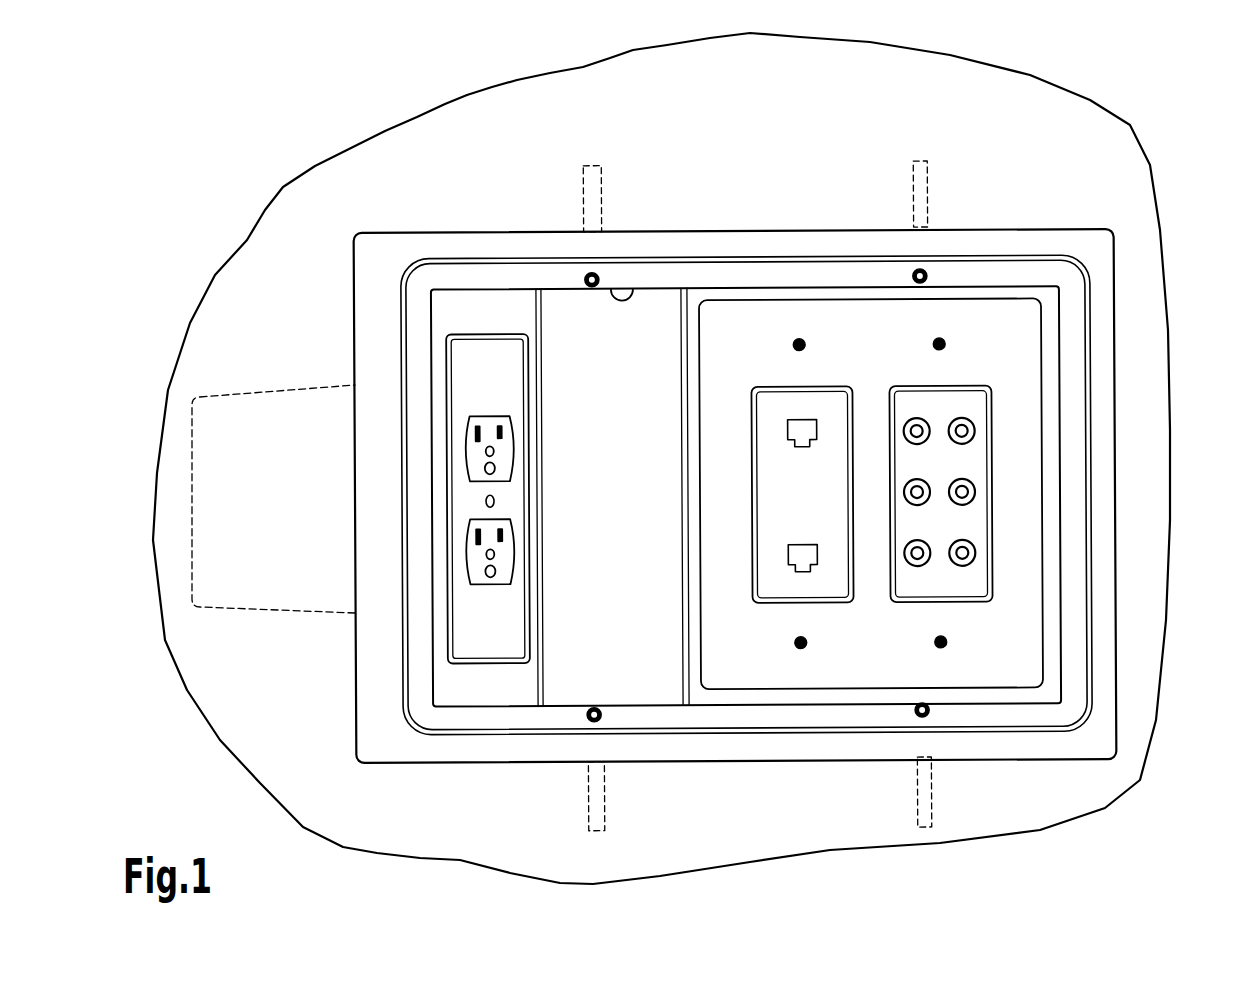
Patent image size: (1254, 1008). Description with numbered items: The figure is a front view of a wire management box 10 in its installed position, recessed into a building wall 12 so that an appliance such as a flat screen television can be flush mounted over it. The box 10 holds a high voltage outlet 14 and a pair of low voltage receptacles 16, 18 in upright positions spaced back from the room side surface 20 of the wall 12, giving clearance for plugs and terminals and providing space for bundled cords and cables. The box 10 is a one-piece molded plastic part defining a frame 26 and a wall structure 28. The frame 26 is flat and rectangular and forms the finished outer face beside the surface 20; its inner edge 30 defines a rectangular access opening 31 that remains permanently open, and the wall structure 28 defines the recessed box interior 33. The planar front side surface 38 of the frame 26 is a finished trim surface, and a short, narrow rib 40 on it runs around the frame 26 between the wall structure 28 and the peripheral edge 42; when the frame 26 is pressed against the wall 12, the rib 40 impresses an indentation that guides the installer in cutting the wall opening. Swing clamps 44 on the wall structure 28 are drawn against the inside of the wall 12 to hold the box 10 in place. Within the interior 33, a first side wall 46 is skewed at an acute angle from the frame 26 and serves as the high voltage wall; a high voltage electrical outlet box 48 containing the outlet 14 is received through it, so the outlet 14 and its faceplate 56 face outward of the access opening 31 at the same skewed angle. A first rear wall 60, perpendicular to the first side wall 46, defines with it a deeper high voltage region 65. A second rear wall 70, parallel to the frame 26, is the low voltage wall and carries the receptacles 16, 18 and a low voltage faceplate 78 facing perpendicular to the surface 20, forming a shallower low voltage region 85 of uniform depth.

The wire management box 10 is at (400, 228).
The building wall 12 is at (460, 92).
The high voltage outlet 14 is at (490, 413).
The low voltage receptacle 16 is at (823, 403).
The low voltage receptacle 18 is at (973, 382).
The room side surface 20 is at (427, 153).
The frame 26 is at (378, 300).
The wall structure 28 is at (445, 305).
The inner edge 30 is at (635, 297).
The access opening 31 is at (672, 288).
The box interior 33 is at (618, 398).
The front side surface 38 is at (1105, 348).
The rib 40 is at (1088, 395).
The peripheral edge 42 is at (1115, 480).
The swing clamps 44 is at (590, 187).
The first side wall 46 is at (465, 677).
The high voltage electrical outlet box 48 is at (238, 417).
The faceplate 56 is at (470, 493).
The first rear wall 60 is at (585, 662).
The high voltage region 65 is at (595, 526).
The second rear wall 70 is at (1050, 555).
The low voltage faceplate 78 is at (1023, 332).
The low voltage region 85 is at (871, 493).